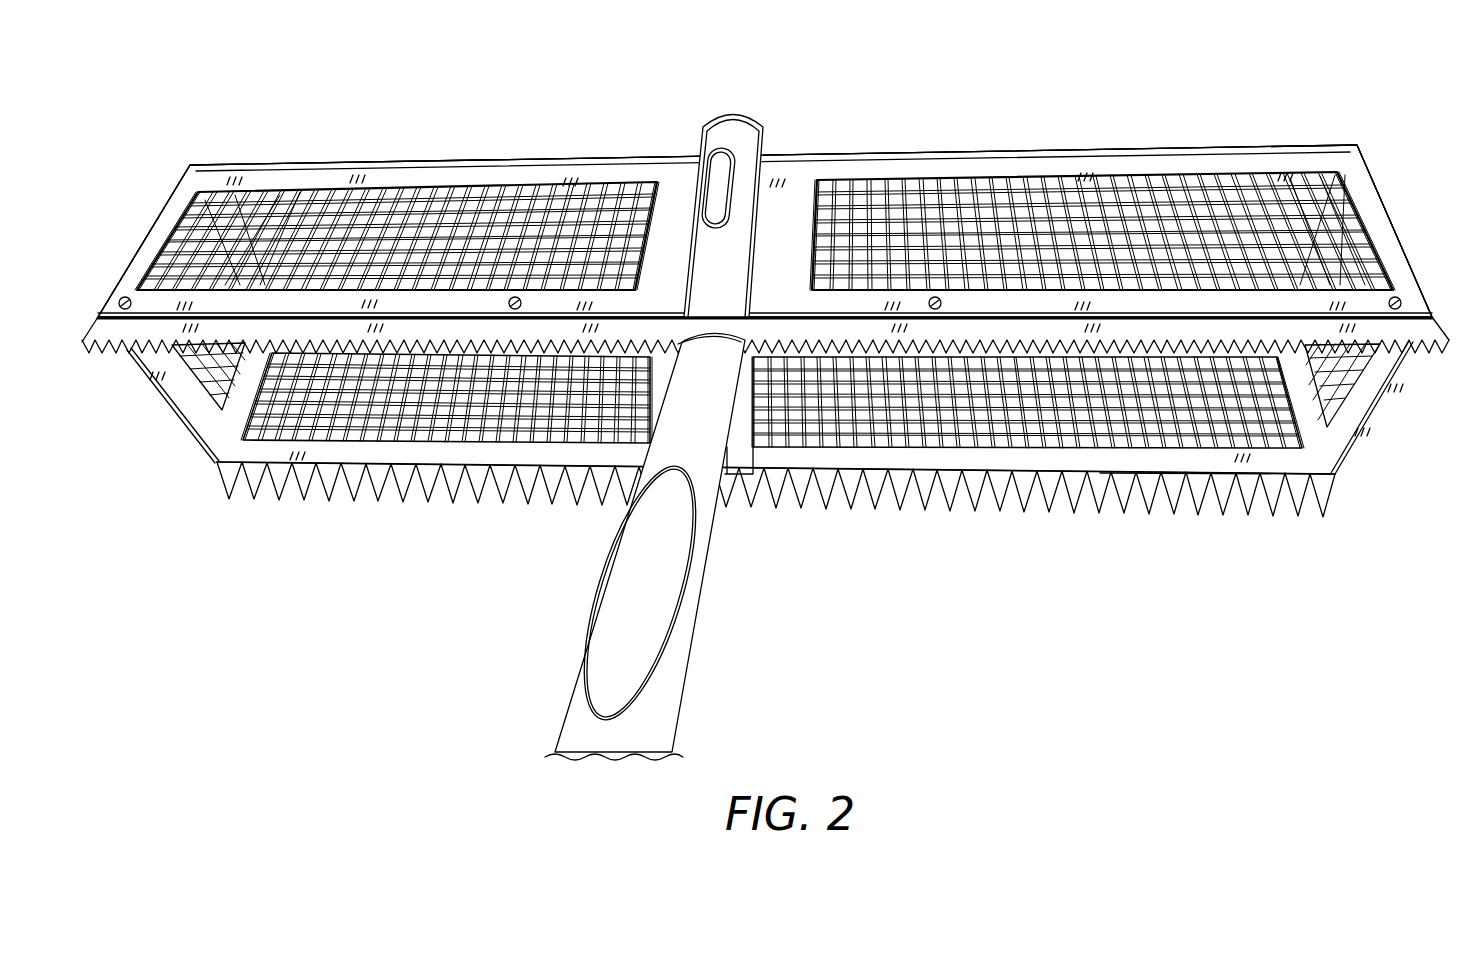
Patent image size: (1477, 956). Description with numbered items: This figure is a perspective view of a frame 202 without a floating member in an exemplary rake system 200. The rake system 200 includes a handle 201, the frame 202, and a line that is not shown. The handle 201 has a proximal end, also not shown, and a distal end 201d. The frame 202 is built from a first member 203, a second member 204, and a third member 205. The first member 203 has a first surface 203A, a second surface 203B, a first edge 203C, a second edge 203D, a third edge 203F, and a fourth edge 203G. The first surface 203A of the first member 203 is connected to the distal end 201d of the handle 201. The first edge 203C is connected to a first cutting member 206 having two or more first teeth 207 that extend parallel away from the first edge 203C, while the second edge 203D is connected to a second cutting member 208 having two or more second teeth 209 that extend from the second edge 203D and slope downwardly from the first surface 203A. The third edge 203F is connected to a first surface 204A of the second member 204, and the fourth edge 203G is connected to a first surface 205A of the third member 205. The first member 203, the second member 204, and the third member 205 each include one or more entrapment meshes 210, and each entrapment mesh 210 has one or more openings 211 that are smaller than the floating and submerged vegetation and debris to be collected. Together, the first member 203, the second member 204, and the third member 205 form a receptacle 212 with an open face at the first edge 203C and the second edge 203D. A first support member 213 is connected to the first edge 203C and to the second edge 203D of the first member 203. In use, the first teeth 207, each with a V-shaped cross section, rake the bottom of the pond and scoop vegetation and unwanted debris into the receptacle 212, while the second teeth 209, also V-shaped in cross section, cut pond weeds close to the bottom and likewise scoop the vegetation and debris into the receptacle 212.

The rake system 200 is at (201, 86).
The handle 201 is at (654, 415).
The distal end 201d is at (734, 112).
The frame 202 is at (904, 124).
The first member 203 is at (781, 263).
The first surface 203A is at (1260, 158).
The second surface 203B is at (812, 420).
The first edge 203C is at (1212, 317).
The second edge 203D is at (1262, 478).
The third edge 203F is at (1372, 199).
The fourth edge 203G is at (232, 165).
The second member 204 is at (1348, 426).
The first surface 204A is at (1376, 381).
The third member 205 is at (195, 421).
The first surface 205A is at (216, 442).
The first cutting member 206 is at (440, 337).
The first teeth 207 is at (557, 358).
The second cutting member 208 is at (993, 503).
The second teeth 209 is at (1065, 480).
The entrapment meshes 210 is at (284, 213).
The openings 211 is at (373, 400).
The receptacle 212 is at (902, 537).
The first support member 213 is at (737, 443).